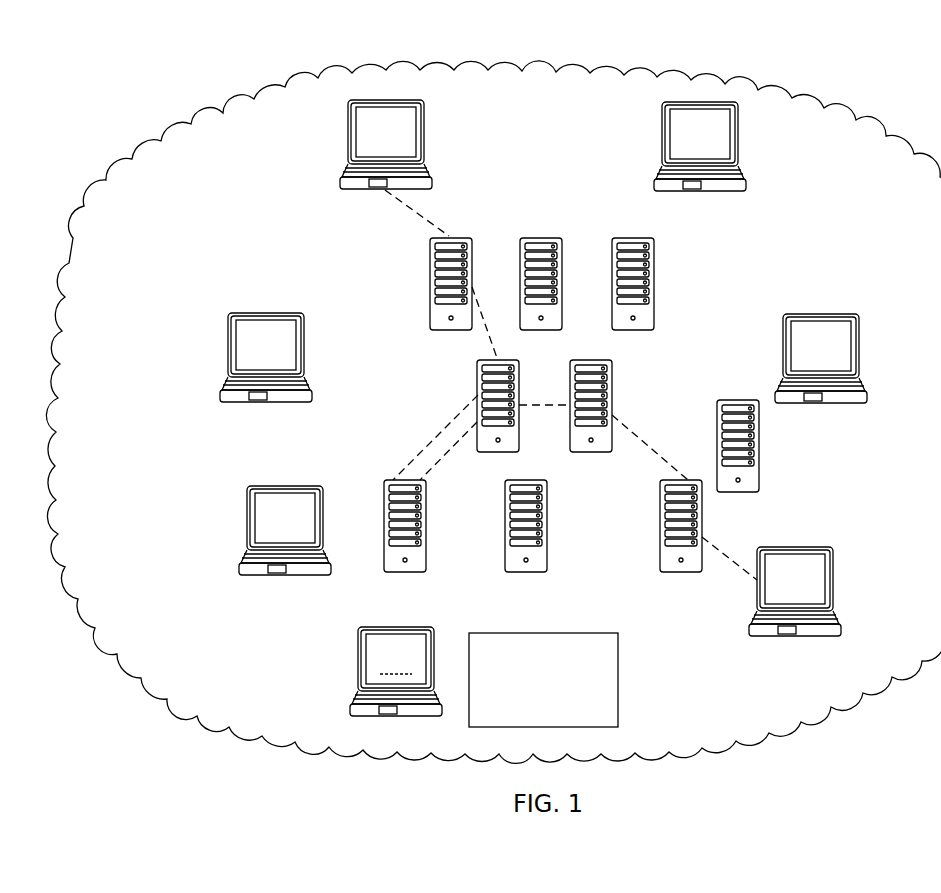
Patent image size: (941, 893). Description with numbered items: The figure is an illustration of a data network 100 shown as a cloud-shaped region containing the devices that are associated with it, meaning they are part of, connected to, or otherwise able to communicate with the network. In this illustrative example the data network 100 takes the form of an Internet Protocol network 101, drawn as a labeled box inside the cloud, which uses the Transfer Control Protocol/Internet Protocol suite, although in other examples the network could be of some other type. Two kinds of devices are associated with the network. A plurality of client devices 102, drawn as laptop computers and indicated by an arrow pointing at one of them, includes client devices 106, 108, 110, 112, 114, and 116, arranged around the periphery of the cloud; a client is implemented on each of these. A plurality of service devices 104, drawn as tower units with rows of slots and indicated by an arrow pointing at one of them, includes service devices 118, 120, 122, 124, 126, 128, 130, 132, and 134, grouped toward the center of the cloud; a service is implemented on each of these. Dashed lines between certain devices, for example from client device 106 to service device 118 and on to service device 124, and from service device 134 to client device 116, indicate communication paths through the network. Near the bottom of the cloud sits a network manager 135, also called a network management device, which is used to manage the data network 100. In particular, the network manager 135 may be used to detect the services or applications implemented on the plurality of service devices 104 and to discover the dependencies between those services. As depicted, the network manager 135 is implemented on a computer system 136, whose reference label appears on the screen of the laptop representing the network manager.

The data network 100 is at (390, 68).
The Internet Protocol network 101 is at (618, 678).
The plurality of client devices 102 is at (232, 302).
The plurality of service devices 104 is at (568, 224).
The client device 106 is at (385, 190).
The client device 108 is at (228, 343).
The client device 110 is at (248, 513).
The client device 112 is at (710, 191).
The client device 114 is at (861, 344).
The client device 116 is at (834, 573).
The service device 118 is at (430, 283).
The service device 120 is at (546, 238).
The service device 122 is at (654, 283).
The service device 124 is at (477, 388).
The service device 126 is at (612, 385).
The service device 128 is at (407, 573).
The service device 130 is at (759, 445).
The service device 132 is at (527, 573).
The service device 134 is at (688, 573).
The network manager 135 is at (359, 652).
The computer system 136 is at (396, 661).